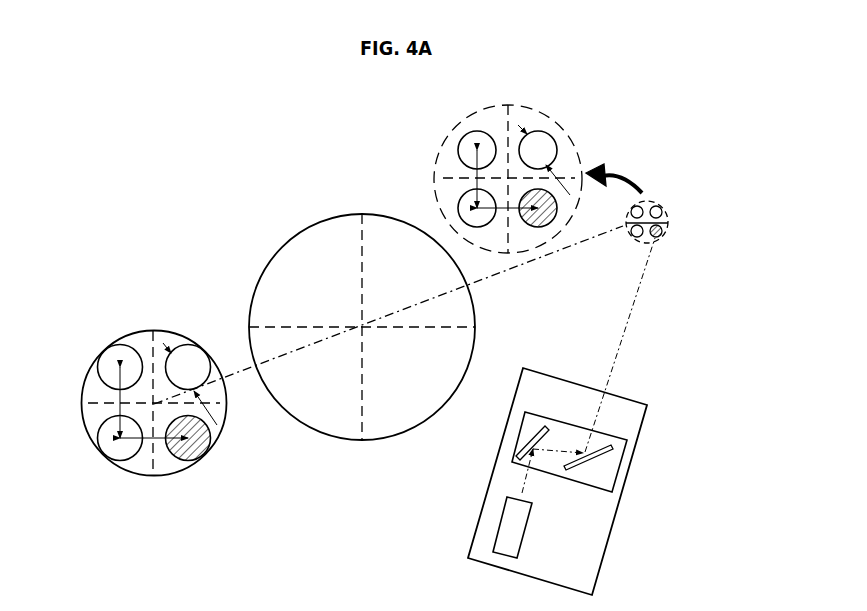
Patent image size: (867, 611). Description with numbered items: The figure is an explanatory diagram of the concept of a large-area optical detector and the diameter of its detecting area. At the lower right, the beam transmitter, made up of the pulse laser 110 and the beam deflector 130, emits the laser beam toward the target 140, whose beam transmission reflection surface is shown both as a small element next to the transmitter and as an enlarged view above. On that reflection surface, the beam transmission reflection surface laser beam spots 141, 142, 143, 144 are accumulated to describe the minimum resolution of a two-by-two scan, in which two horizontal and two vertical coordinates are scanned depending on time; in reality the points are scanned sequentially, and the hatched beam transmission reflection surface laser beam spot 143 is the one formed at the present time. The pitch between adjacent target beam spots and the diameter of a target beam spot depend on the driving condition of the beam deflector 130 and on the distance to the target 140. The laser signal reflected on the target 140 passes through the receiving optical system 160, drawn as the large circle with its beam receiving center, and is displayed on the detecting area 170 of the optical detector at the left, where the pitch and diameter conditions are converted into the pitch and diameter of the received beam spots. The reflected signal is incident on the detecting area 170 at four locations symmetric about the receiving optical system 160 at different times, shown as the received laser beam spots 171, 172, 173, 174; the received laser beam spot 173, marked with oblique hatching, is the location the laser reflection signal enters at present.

The pulse laser 110 is at (498, 520).
The beam deflector 130 is at (622, 467).
The target 140 is at (655, 201).
The beam transmission reflection surface laser beam spot 141 is at (461, 136).
The beam transmission reflection surface laser beam spot 142 is at (472, 232).
The beam transmission reflection surface laser beam spot 143 is at (555, 228).
The beam transmission reflection surface laser beam spot 144 is at (556, 131).
The receiving optical system 160 is at (338, 214).
The detecting area 170 is at (134, 332).
The received laser beam spot 171 is at (98, 356).
The received laser beam spot 172 is at (99, 453).
The received laser beam spot 173 is at (211, 452).
The received laser beam spot 174 is at (199, 346).